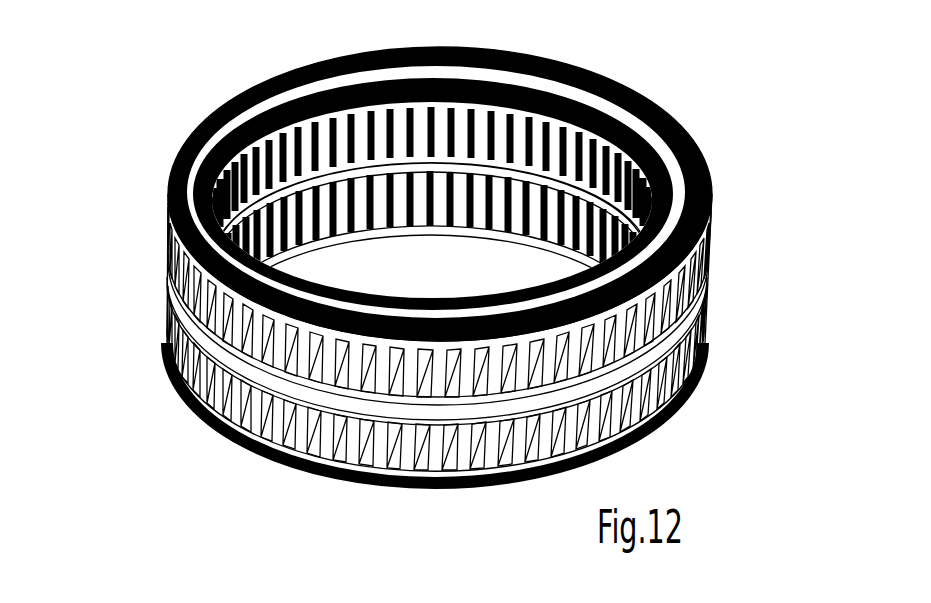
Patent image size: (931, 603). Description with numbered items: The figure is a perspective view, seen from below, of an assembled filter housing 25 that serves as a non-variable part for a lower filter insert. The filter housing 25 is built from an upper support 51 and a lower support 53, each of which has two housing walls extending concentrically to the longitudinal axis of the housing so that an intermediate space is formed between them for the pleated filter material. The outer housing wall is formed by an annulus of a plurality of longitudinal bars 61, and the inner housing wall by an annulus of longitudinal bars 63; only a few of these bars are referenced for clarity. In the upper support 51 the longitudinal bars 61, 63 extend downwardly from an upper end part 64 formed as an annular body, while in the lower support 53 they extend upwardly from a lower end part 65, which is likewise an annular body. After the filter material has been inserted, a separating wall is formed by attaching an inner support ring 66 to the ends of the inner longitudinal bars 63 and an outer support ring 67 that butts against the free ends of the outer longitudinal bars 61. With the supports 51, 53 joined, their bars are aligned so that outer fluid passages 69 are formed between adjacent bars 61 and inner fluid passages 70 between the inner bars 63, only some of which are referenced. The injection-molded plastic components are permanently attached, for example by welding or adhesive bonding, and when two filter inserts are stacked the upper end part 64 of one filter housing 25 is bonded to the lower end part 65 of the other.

The filter housing 25 is at (742, 223).
The upper support 51 is at (680, 396).
The lower support 53 is at (162, 288).
The longitudinal bars 61 is at (549, 466).
The longitudinal bars 63 is at (525, 87).
The upper end part 64 is at (617, 443).
The lower end part 65 is at (633, 140).
The inner support ring 66 is at (463, 236).
The outer support ring 67 is at (282, 462).
The outer fluid passages 69 is at (215, 413).
The inner fluid passages 70 is at (410, 233).